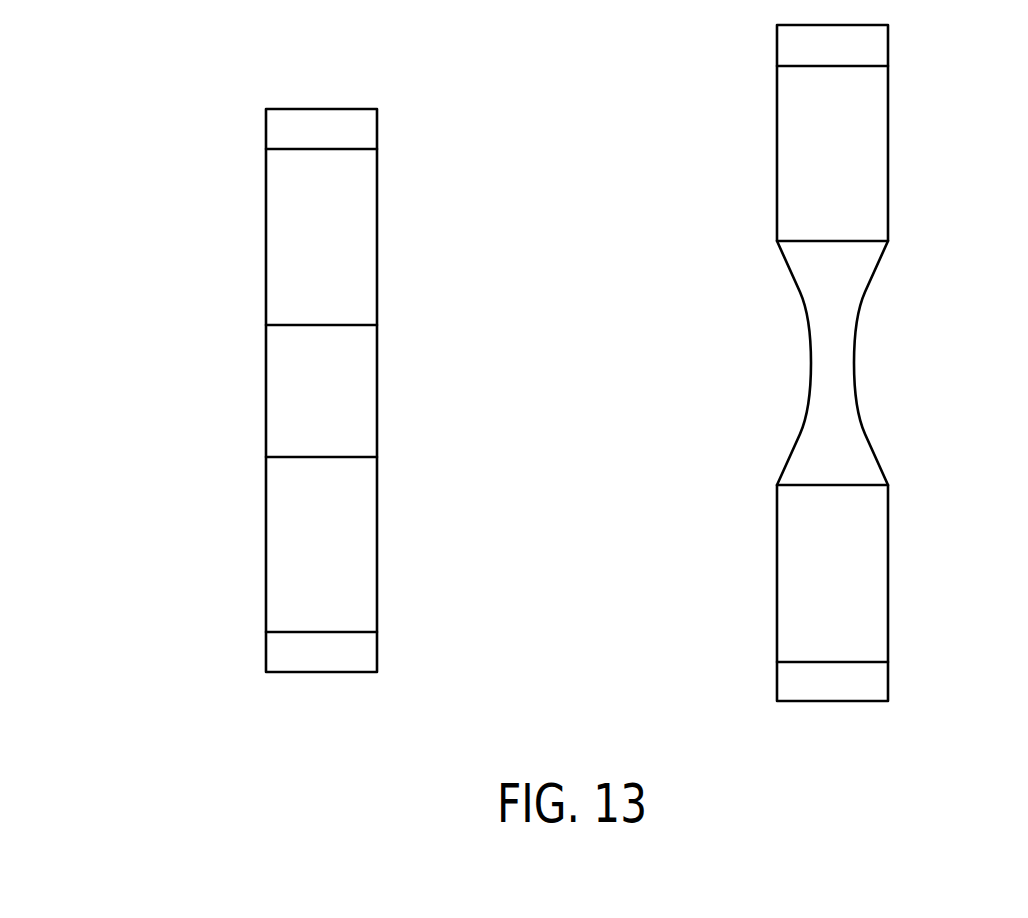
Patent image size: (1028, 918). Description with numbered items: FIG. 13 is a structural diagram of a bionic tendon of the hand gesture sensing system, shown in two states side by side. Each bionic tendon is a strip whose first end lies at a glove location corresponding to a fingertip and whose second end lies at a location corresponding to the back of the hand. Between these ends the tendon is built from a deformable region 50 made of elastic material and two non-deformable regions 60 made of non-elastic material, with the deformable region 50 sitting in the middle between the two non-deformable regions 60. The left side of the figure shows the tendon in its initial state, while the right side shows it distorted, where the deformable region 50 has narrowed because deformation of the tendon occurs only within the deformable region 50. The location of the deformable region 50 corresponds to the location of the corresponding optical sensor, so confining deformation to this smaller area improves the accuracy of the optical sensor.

The deformable region 50 is at (283, 402).
The non-deformable region 60 is at (283, 246).